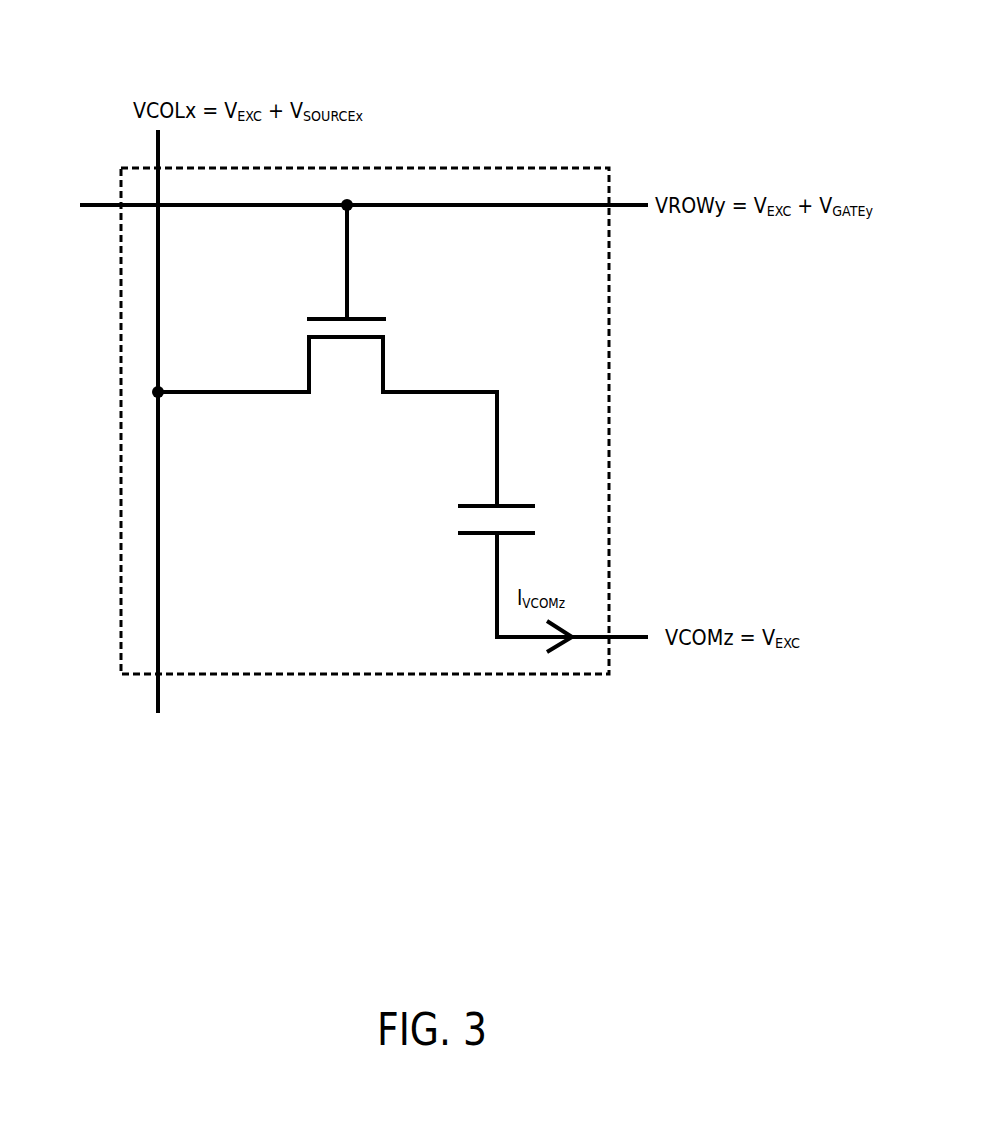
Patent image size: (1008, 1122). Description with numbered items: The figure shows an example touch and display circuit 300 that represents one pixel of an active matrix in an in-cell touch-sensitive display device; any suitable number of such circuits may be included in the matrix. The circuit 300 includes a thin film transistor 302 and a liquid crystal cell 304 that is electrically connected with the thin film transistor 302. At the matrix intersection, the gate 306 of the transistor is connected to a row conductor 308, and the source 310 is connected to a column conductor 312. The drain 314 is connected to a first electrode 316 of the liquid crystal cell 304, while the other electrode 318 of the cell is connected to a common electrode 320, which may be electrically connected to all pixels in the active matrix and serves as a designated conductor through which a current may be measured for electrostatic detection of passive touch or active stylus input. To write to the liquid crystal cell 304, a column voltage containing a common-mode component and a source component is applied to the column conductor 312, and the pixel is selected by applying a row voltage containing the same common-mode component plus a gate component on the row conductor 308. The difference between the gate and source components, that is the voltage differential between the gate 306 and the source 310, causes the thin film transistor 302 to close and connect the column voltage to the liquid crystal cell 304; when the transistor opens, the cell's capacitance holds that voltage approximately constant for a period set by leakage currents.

The touch and display circuit 300 is at (567, 62).
The thin film transistor 302 is at (386, 298).
The liquid crystal cell 304 is at (532, 486).
The gate 306 is at (328, 316).
The row conductor 308 is at (402, 205).
The source 310 is at (291, 393).
The column conductor 312 is at (158, 537).
The drain 314 is at (402, 391).
The first electrode 316 is at (468, 503).
The other electrode 318 is at (468, 537).
The common electrode 320 is at (525, 640).